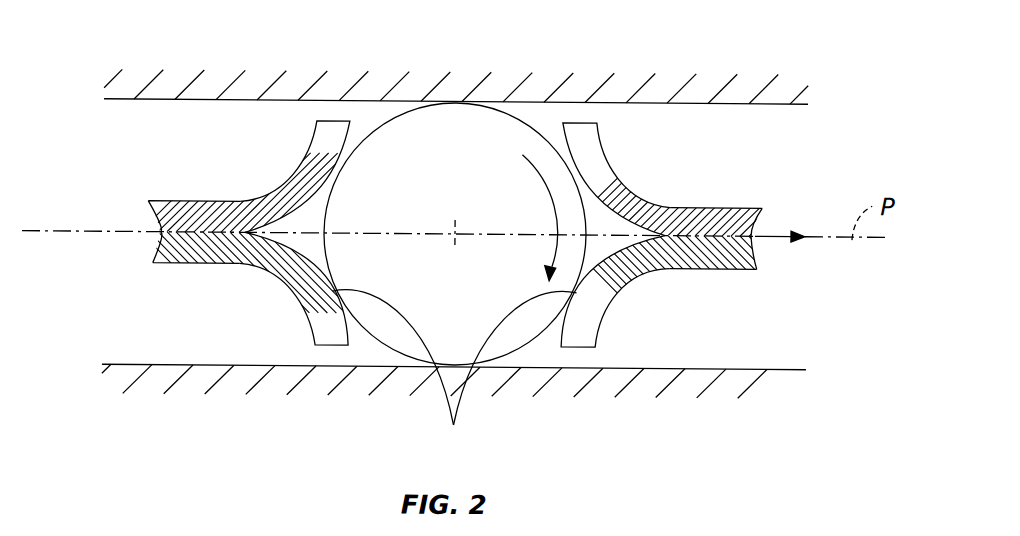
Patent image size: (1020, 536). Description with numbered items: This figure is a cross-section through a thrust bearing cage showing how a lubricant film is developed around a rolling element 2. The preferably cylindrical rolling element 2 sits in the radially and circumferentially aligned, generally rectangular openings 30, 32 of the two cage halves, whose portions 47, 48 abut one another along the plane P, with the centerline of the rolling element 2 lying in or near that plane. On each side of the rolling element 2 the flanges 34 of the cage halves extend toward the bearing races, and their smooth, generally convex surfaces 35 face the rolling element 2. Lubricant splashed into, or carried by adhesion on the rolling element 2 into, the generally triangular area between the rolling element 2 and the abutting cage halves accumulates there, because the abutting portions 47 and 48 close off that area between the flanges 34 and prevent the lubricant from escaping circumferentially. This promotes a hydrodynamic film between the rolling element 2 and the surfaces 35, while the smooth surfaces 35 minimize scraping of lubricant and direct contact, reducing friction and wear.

The rolling element 2 is at (462, 143).
The opening 30 is at (550, 124).
The opening 32 is at (553, 348).
The flange 34 is at (313, 160).
The surface 35 is at (401, 379).
The portion 47 is at (168, 203).
The portion 48 is at (168, 266).